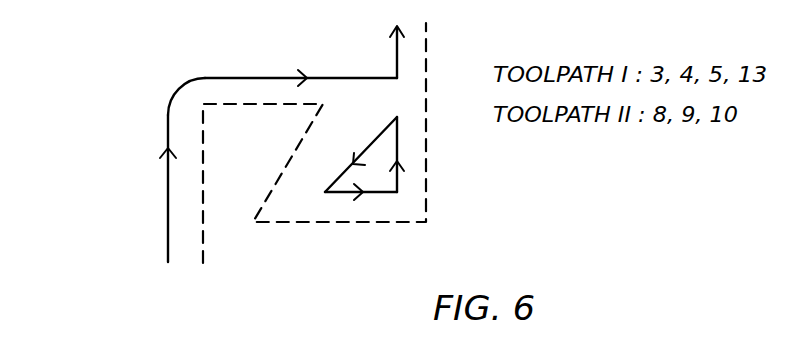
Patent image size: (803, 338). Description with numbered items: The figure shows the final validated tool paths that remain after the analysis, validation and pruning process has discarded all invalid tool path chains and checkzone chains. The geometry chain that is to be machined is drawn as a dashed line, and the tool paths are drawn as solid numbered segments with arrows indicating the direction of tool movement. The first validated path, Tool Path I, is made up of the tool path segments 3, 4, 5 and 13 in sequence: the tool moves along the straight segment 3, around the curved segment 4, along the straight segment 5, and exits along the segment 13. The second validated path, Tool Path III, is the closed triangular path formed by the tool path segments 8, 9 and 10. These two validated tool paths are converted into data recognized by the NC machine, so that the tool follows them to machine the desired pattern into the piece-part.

The tool path segment 3 is at (168, 206).
The tool path segment 4 is at (173, 90).
The tool path segment 5 is at (253, 76).
The tool path segment 13 is at (396, 56).
The tool path segment 8 is at (388, 125).
The tool path segment 9 is at (378, 193).
The tool path segment 10 is at (398, 155).